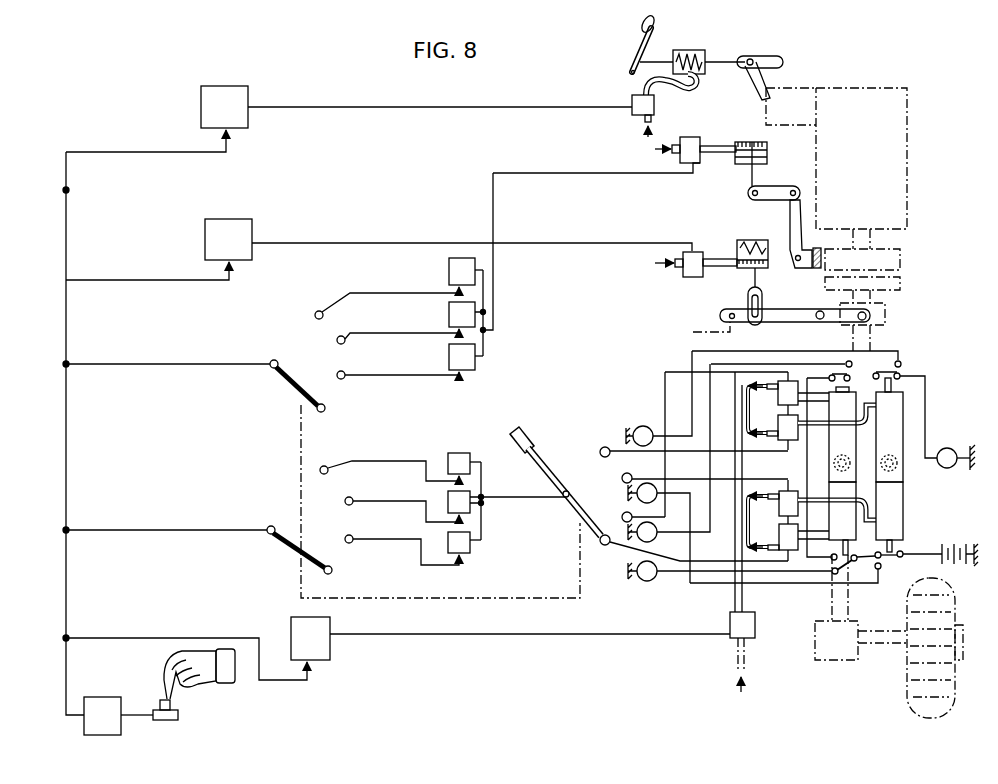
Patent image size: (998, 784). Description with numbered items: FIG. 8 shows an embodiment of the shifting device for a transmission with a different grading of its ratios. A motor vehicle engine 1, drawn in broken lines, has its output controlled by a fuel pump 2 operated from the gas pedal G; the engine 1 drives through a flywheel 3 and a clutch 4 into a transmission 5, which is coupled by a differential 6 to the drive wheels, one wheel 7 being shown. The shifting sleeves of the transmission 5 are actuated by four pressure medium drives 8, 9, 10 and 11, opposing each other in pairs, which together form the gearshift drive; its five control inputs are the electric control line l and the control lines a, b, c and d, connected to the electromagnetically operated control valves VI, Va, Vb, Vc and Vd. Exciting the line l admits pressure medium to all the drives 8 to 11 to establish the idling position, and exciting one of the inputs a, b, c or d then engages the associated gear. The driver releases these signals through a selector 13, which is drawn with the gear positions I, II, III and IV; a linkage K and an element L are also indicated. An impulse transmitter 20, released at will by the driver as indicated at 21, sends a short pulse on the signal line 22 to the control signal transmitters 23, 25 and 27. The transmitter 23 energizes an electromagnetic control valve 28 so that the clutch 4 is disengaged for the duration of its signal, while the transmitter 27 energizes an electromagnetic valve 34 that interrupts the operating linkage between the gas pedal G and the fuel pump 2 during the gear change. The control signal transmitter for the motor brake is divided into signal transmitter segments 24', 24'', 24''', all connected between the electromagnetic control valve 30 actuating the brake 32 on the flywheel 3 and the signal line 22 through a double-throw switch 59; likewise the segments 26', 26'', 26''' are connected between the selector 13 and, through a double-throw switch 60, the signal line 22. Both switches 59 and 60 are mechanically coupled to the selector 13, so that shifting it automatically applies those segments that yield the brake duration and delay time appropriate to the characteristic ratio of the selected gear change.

The motor vehicle engine 1 is at (851, 92).
The fuel pump 2 is at (800, 92).
The flywheel 3 is at (903, 258).
The clutch 4 is at (903, 288).
The transmission 5 is at (906, 490).
The differential 6 is at (830, 660).
The drive wheel 7 is at (907, 692).
The pressure medium drive 8 is at (849, 503).
The pressure medium drive 9 is at (848, 446).
The pressure medium drive 10 is at (896, 503).
The pressure medium drive 11 is at (898, 446).
The selector 13 is at (549, 456).
The impulse transmitter 20 is at (116, 724).
The release actuation 21 is at (174, 720).
The signal line 22 is at (68, 440).
The control signal transmitter 23 is at (228, 226).
The signal transmitter segment 24' is at (434, 361).
The signal transmitter segment 24'' is at (435, 264).
The signal transmitter segment 24''' is at (425, 288).
The control signal transmitter 25 is at (314, 662).
The signal transmitter segment 26' is at (433, 548).
The signal transmitter segment 26'' is at (455, 501).
The signal transmitter segment 26''' is at (422, 468).
The control signal transmitter 27 is at (222, 94).
The electromagnetic control valve 28 is at (693, 277).
The electromagnetic control valve 30 is at (694, 163).
The motor brake 32 is at (808, 268).
The electromagnetic valve 34 is at (637, 116).
The double-throw switch 59 is at (300, 380).
The double-throw switch 60 is at (292, 542).
The gas pedal G is at (630, 36).
The clutch linkage K is at (771, 305).
The lamp L is at (956, 457).
The electromagnetically operated control valve Va is at (788, 537).
The electromagnetically operated control valve Vb is at (788, 393).
The electromagnetically operated control valve Vc is at (812, 505).
The electromagnetically operated control valve Vd is at (812, 422).
The electromagnetically operated control valve VI is at (742, 652).
The gear position I is at (730, 571).
The gear position II is at (669, 453).
The gear position III is at (659, 533).
The gear position IV is at (659, 398).
The electric control line a is at (668, 561).
The electric control line b is at (662, 518).
The electric control line c is at (678, 479).
The electric control line d is at (700, 451).